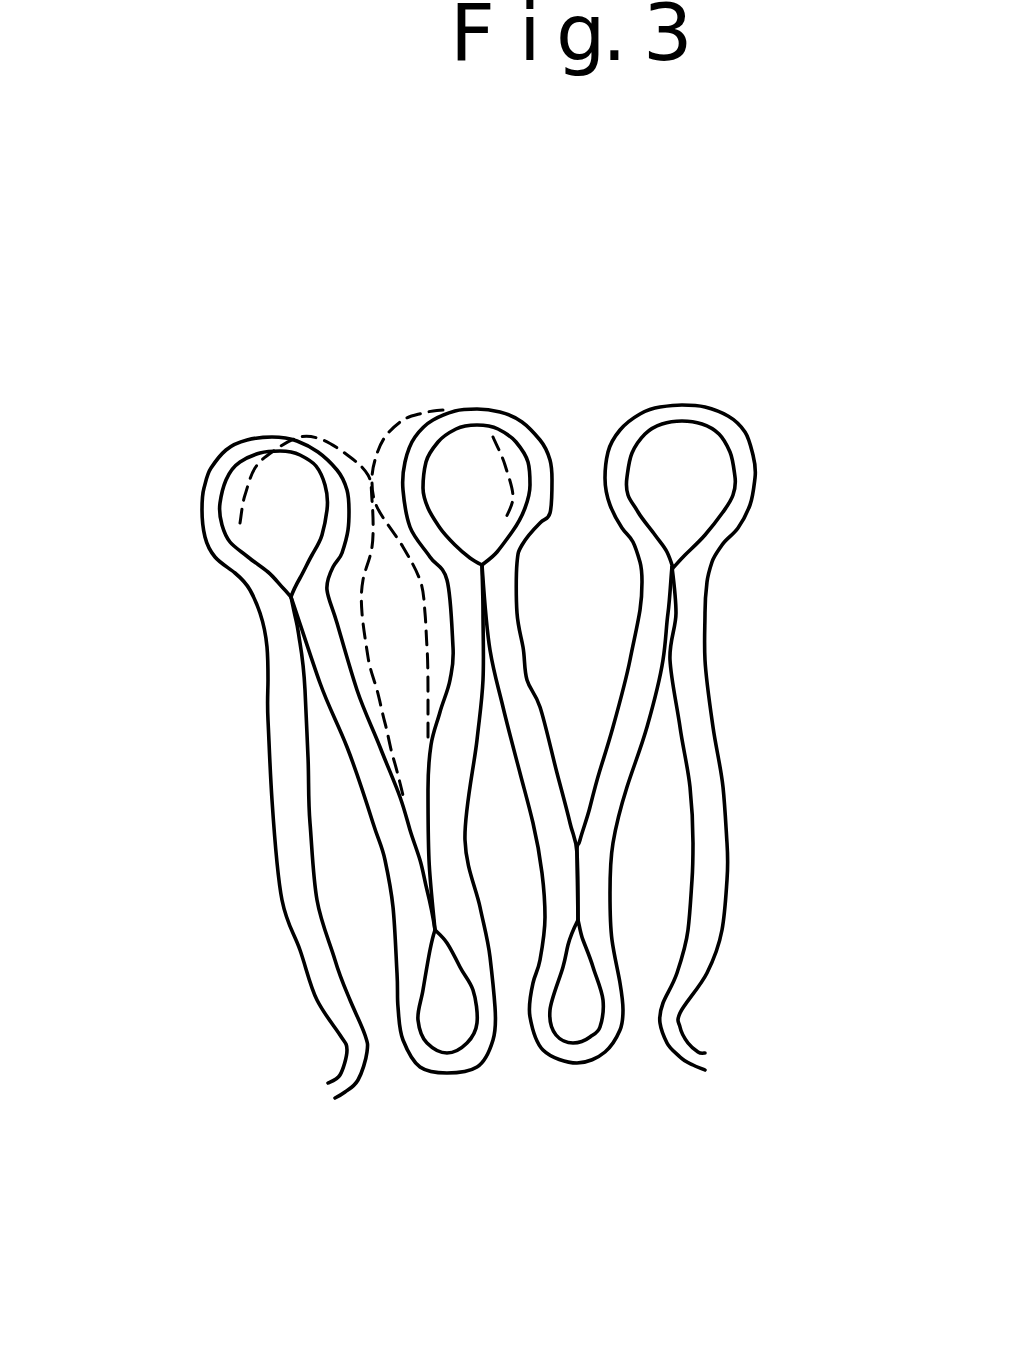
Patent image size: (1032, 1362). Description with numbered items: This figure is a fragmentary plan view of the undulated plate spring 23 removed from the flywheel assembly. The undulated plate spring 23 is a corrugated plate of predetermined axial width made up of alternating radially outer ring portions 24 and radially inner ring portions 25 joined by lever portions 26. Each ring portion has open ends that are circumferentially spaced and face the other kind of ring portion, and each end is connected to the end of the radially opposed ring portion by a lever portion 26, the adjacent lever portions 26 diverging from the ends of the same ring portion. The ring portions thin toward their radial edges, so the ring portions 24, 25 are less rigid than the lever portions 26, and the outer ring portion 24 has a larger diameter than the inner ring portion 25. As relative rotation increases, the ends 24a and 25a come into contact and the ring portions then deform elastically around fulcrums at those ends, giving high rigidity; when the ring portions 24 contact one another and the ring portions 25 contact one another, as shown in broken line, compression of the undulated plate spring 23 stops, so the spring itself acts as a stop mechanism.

The undulated plate spring 23 is at (481, 651).
The radially outer ring portion 24 is at (478, 417).
The end of radially outer ring portion 24a is at (420, 557).
The radially inner ring portion 25 is at (447, 912).
The end of radially inner ring portion 25a is at (689, 814).
The lever portion 26 is at (638, 669).